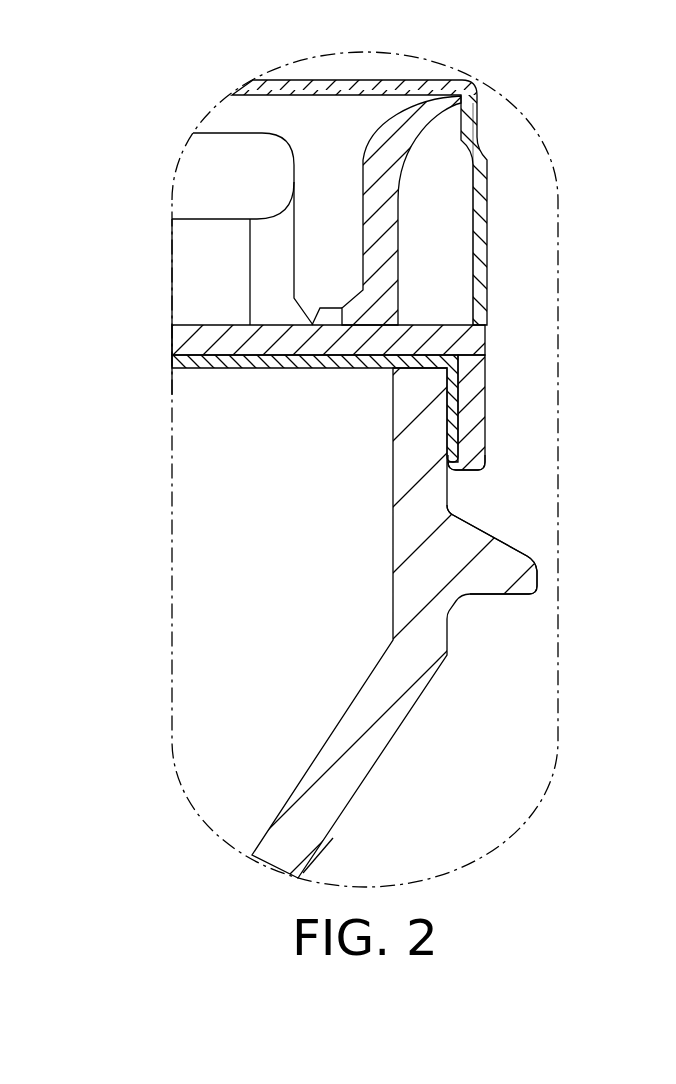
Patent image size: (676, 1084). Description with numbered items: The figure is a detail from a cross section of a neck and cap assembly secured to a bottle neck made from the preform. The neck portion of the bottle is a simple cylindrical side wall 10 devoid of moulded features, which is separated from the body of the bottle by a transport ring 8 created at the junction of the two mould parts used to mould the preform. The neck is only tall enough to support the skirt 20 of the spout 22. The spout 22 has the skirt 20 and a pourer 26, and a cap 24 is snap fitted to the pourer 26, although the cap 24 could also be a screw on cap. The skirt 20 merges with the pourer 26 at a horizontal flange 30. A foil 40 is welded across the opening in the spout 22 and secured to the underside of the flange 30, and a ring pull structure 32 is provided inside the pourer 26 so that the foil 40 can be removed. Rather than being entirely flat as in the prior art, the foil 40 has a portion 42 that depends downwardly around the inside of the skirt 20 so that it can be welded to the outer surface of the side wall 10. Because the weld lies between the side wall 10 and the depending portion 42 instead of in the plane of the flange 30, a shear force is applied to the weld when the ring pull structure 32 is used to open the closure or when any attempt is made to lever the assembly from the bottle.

The transport ring 8 is at (530, 583).
The side wall 10 is at (403, 528).
The skirt 20 is at (477, 387).
The spout 22 is at (408, 228).
The cap 24 is at (487, 175).
The pourer 26 is at (383, 277).
The horizontal flange 30 is at (433, 343).
The ring pull structure 32 is at (185, 185).
The foil 40 is at (293, 360).
The depending portion 42 is at (468, 445).